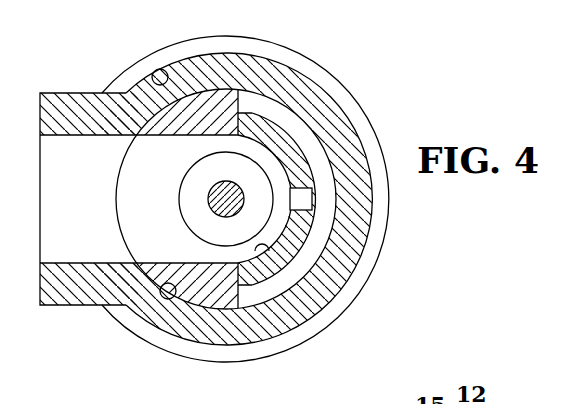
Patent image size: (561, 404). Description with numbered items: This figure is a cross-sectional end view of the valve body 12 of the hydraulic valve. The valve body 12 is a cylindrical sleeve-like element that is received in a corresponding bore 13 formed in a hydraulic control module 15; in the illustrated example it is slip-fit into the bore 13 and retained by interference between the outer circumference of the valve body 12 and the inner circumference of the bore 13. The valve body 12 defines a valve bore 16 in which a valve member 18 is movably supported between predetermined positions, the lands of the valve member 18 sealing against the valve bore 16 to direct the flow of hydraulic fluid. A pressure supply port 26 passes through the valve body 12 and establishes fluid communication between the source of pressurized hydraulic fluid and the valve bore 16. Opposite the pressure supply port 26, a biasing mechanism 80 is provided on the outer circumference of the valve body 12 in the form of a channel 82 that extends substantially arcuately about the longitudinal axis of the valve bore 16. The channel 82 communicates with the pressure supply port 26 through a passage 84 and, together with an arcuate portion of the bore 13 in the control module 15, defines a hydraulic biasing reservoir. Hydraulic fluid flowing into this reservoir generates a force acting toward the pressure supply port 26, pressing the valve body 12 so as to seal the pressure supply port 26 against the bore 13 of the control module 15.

The valve body 12 is at (207, 103).
The bore 13 is at (182, 296).
The hydraulic control module 15 is at (160, 69).
The valve bore 16 is at (264, 246).
The valve member 18 is at (188, 202).
The pressure supply port 26 is at (67, 134).
The biasing mechanism 80 is at (264, 92).
The channel 82 is at (308, 143).
The passage 84 is at (300, 199).